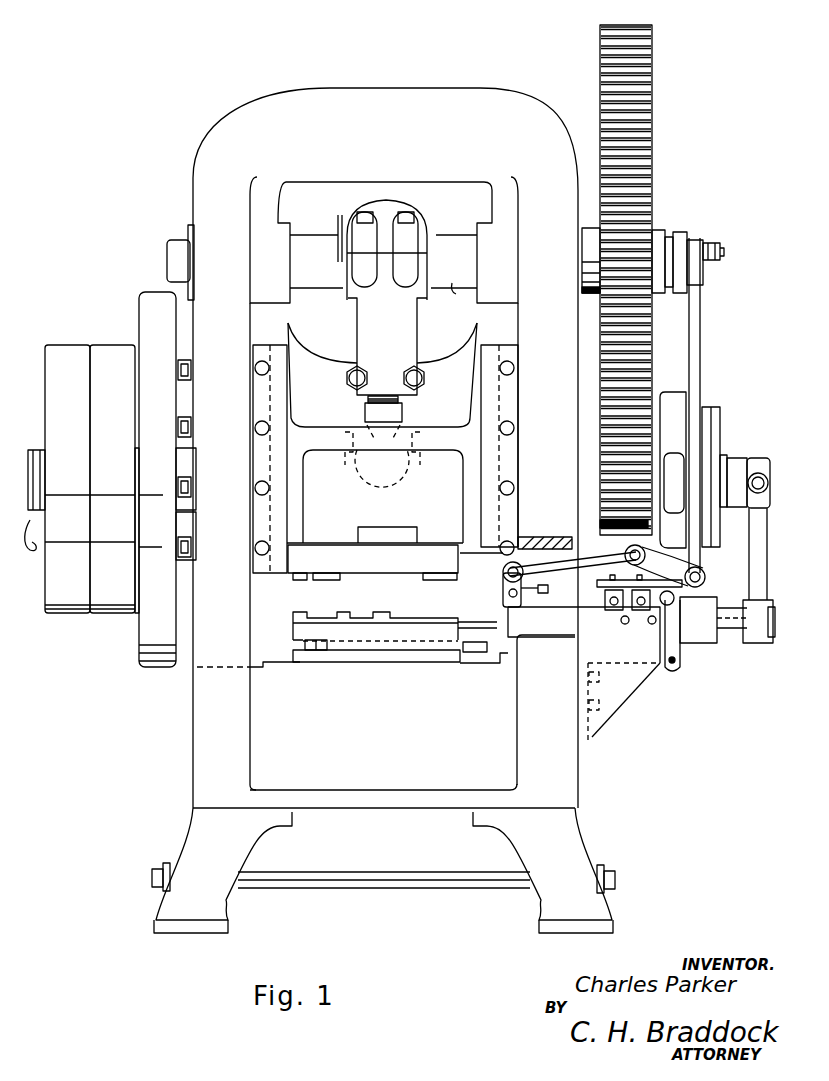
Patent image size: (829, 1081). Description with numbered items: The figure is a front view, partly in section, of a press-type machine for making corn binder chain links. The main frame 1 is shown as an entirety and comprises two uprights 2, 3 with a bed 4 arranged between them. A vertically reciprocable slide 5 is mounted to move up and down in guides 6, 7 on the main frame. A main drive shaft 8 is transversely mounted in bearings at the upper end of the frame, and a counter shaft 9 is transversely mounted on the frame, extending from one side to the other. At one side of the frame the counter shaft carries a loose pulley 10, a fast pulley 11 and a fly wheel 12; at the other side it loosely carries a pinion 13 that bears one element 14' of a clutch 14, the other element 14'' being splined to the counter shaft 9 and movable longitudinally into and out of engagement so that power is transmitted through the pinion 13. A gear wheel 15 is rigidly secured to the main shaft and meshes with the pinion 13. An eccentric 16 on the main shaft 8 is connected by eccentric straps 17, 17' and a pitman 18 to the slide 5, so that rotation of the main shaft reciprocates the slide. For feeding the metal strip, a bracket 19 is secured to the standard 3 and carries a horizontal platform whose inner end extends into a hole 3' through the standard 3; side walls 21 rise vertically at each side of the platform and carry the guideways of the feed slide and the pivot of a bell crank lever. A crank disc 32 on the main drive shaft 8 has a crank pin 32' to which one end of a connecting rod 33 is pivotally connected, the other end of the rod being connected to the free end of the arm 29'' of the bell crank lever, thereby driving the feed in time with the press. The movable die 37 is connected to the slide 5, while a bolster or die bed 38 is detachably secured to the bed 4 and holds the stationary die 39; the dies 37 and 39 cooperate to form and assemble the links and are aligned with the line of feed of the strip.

The main frame 1 is at (385, 777).
The upright 2 is at (180, 688).
The upright 3 is at (532, 544).
The hole 3' is at (482, 557).
The bed 4 is at (283, 660).
The vertically reciprocable slide 5 is at (310, 495).
The guide 6 is at (270, 458).
The guide 7 is at (500, 450).
The main drive shaft 8 is at (176, 248).
The counter shaft 9 is at (775, 468).
The loose pulley 10 is at (65, 350).
The fast pulley 11 is at (118, 332).
The fly wheel 12 is at (150, 300).
The pinion 13 is at (622, 526).
The clutch 14 is at (712, 459).
The clutch element 14' is at (673, 459).
The clutch element 14'' is at (733, 473).
The gear wheel 15 is at (640, 130).
The eccentric 16 is at (345, 220).
The eccentric strap 17 is at (397, 245).
The eccentric strap 17' is at (400, 244).
The pitman 18 is at (405, 412).
The bracket 19 is at (625, 645).
The side wall 21 is at (553, 612).
The arm of bell crank lever 29'' is at (689, 567).
The crank disc 32 is at (688, 249).
The crank pin 32' is at (727, 247).
The connecting rod 33 is at (700, 328).
The movable die 37 is at (373, 562).
The bolster or die bed 38 is at (355, 657).
The stationary die 39 is at (432, 592).